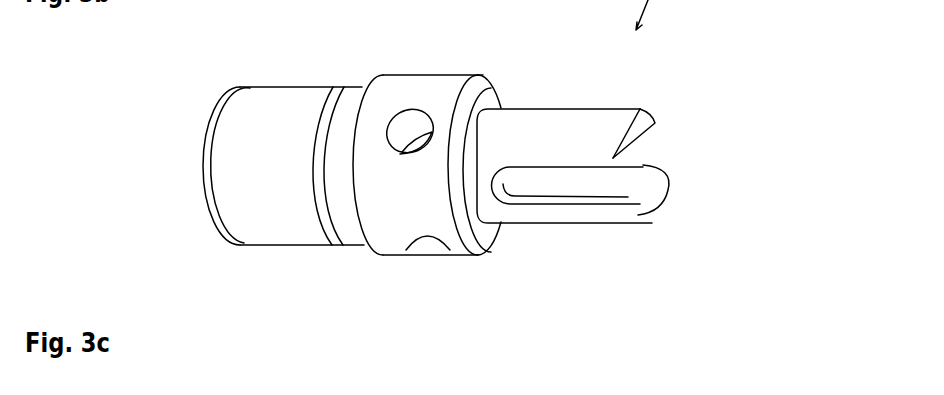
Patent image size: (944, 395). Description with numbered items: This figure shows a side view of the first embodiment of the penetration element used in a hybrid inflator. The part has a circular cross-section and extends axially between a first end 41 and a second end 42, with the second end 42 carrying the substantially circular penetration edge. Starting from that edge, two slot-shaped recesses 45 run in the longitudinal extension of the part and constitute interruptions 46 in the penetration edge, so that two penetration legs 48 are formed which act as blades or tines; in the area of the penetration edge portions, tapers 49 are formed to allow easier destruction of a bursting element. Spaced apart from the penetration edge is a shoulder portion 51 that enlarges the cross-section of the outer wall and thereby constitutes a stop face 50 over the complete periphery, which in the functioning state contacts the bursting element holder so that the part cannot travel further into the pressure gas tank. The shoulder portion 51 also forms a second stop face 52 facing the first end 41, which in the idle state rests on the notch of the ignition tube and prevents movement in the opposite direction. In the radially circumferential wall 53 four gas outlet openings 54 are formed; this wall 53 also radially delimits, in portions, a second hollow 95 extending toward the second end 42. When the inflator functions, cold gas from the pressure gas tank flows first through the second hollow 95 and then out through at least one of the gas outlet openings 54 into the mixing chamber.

The first end 41 is at (218, 112).
The second end 42 is at (667, 178).
The recesses 45 is at (519, 190).
The interruptions 46 is at (595, 203).
The penetration legs 48 is at (528, 124).
The tapers 49 is at (638, 110).
The stop face 50 is at (482, 98).
The shoulder portion 51 is at (423, 88).
The second stop face 52 is at (376, 86).
The radially circumferential wall 53 is at (378, 213).
The gas outlet openings 54 is at (401, 155).
The second hollow 95 is at (634, 185).